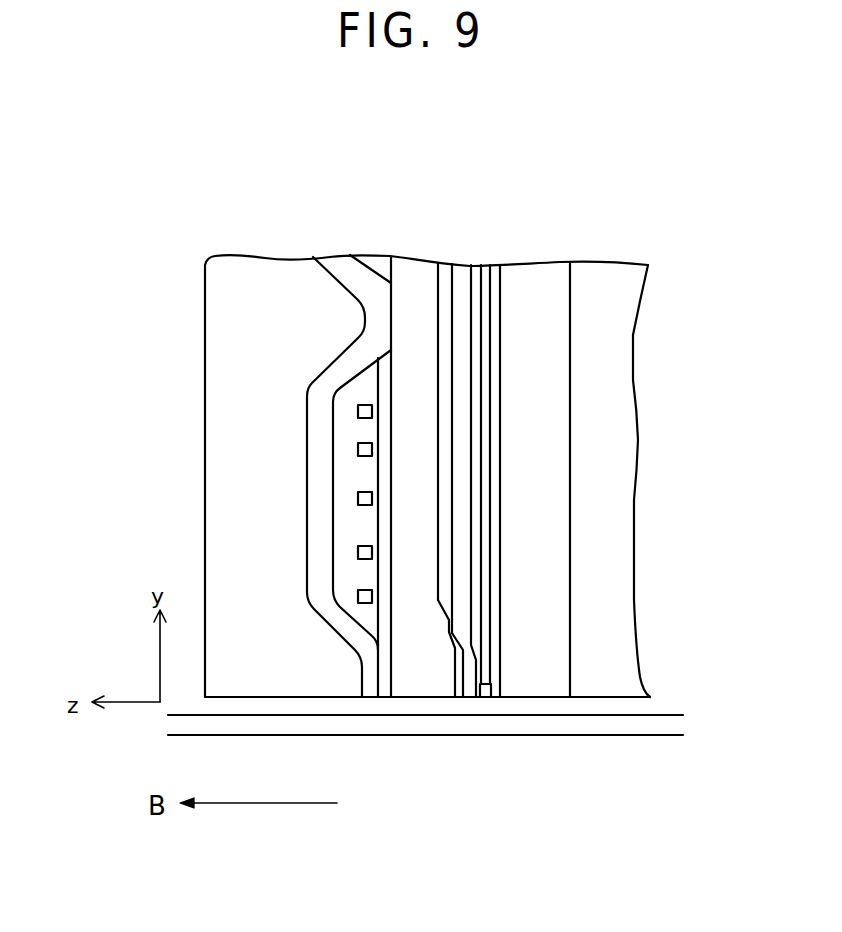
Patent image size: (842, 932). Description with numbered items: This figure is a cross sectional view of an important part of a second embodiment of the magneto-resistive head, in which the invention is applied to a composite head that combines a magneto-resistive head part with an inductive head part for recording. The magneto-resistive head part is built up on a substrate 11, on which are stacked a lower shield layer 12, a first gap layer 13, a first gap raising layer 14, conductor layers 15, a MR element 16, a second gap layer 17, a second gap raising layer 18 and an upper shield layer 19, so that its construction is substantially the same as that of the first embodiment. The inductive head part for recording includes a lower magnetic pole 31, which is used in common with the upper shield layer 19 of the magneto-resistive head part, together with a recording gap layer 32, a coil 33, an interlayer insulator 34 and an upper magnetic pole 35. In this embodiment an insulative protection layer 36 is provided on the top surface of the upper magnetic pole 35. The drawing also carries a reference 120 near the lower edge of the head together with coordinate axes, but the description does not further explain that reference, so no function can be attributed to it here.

The substrate 11 is at (618, 648).
The lower shield layer 12 is at (538, 278).
The first gap layer 13 is at (495, 267).
The first gap raising layer 14 is at (485, 267).
The conductor layers 15 is at (472, 267).
The MR element 16 is at (485, 697).
The second gap layer 17 is at (463, 697).
The second gap raising layer 18 is at (445, 267).
The upper shield layer 19 is at (381, 417).
The lower magnetic pole 31 is at (407, 267).
The recording gap layer 32 is at (389, 692).
The coil 33 is at (363, 498).
The interlayer insulator 34 is at (343, 402).
The upper magnetic pole 35 is at (318, 422).
The insulative protection layer 36 is at (260, 277).
The air bearing surface 120 is at (650, 728).